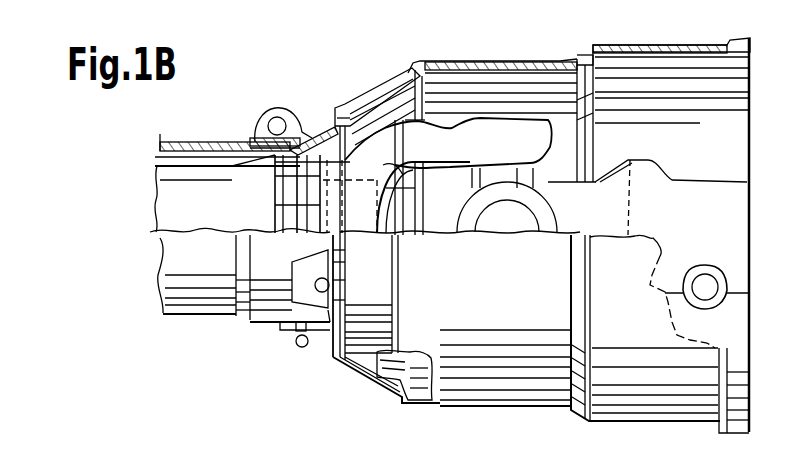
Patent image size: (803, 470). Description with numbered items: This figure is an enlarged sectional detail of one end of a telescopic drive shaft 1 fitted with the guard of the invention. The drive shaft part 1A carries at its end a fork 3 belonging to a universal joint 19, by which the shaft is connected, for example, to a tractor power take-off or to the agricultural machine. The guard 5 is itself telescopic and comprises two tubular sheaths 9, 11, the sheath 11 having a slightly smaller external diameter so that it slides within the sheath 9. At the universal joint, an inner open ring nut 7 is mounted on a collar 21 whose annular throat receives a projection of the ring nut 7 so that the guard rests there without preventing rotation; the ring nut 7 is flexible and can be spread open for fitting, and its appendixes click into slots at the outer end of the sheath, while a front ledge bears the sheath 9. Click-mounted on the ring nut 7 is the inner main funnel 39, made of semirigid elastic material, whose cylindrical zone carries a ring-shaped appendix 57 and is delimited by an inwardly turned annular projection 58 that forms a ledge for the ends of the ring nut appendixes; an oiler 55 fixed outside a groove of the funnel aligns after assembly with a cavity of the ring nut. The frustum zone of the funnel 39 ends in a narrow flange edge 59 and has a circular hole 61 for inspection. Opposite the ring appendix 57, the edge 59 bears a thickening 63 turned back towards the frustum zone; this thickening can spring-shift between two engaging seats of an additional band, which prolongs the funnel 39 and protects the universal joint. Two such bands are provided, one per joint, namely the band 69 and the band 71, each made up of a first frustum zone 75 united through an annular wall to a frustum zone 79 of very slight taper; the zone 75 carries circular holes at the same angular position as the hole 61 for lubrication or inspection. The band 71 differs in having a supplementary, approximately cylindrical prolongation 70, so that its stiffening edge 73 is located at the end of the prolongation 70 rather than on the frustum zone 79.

The telescopic drive shaft 1 is at (275, 218).
The drive shaft part 1A is at (198, 185).
The fork 3 is at (456, 126).
The guard 5 is at (174, 140).
The inner open ring nut 7 is at (283, 153).
The tubular sheath 9 is at (211, 322).
The tubular sheath 11 is at (245, 322).
The universal joint 19 is at (470, 186).
The collar 21 is at (310, 226).
The inner main funnel 39 is at (322, 352).
The oiler 55 is at (301, 340).
The ring-shaped appendix 57 is at (270, 108).
The annular projection 58 is at (248, 140).
The narrow flange edge 59 is at (440, 72).
The circular hole 61 is at (373, 112).
The thickening 63 is at (433, 400).
The additional band 69 is at (497, 55).
The supplementary prolongation 70 is at (622, 410).
The additional band 71 is at (568, 421).
The stiffening edge 73 is at (735, 422).
The first frustum zone 75 is at (366, 110).
The frustum zone 79 is at (500, 406).